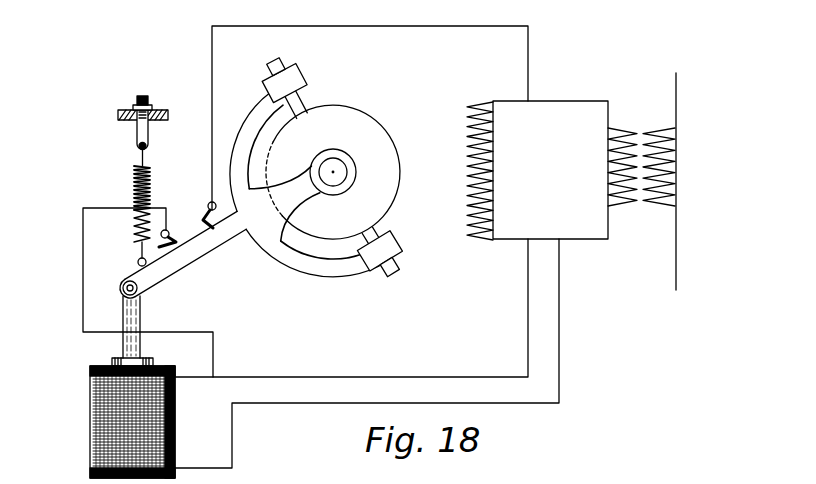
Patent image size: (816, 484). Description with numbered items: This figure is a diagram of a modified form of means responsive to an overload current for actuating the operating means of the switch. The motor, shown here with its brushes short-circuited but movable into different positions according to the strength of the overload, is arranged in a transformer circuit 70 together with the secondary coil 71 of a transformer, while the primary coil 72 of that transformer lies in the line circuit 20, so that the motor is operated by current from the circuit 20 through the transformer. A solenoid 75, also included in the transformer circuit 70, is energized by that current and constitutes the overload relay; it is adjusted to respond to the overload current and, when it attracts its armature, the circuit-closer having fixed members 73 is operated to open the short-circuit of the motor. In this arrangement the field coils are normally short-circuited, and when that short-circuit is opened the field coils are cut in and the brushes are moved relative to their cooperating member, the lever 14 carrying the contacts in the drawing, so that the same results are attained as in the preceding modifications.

The armature lever 14 is at (200, 236).
The circuit 20 is at (677, 250).
The transformer circuit 70 is at (362, 377).
The secondary coil 71 is at (607, 164).
The primary coil 72 is at (676, 178).
The fixed members 73 is at (166, 230).
The solenoid 75 is at (102, 418).